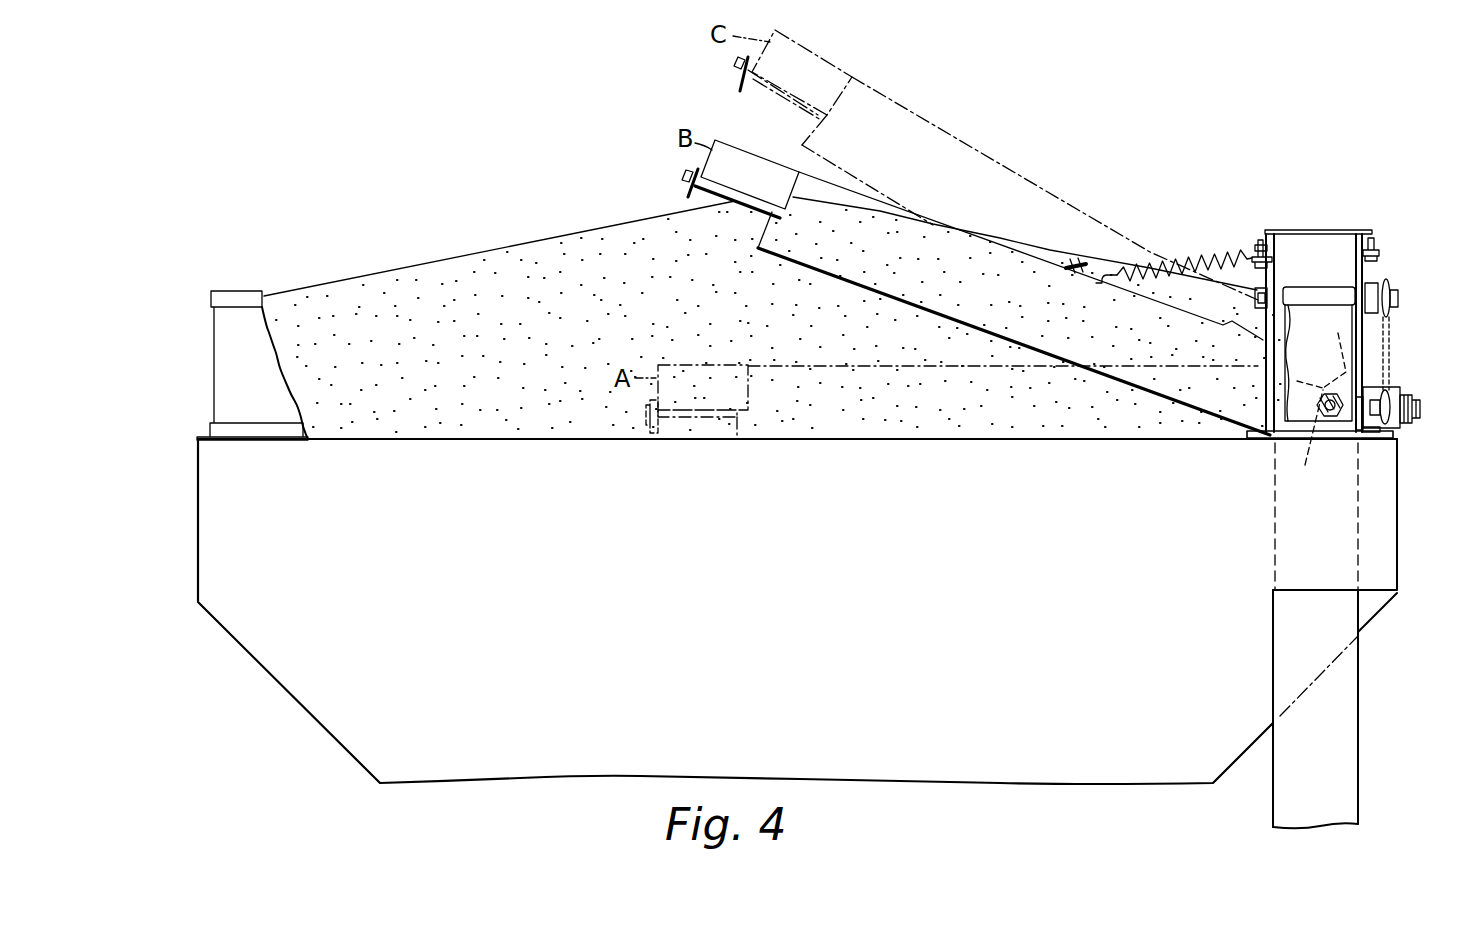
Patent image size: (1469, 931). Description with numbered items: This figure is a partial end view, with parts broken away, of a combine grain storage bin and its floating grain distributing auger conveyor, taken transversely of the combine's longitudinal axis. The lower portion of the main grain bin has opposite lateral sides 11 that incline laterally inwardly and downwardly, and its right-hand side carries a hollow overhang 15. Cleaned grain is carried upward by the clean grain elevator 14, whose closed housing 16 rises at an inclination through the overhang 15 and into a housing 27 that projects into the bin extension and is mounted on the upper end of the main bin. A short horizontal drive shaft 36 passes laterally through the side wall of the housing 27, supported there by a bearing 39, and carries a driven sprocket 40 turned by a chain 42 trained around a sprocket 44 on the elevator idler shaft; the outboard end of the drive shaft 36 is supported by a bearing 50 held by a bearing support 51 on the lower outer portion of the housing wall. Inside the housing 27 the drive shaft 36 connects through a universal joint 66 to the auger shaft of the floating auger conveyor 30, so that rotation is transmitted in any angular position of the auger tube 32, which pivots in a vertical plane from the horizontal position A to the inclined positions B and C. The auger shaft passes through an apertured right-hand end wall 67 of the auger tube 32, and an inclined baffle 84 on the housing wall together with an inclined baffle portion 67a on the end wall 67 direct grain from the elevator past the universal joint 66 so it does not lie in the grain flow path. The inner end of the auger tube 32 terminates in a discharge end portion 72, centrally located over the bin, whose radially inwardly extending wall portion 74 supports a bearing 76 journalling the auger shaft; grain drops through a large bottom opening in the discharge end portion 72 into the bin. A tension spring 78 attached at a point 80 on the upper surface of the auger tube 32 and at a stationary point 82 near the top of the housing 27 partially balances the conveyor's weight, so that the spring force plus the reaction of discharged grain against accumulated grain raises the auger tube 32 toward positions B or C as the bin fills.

The inclined lateral sides 11 is at (300, 697).
The clean grain elevator 14 is at (1358, 710).
The hollow overhang 15 is at (1397, 530).
The closed housing 16 is at (1345, 768).
The housing 27 is at (1337, 272).
The floating auger conveyor subassembly 30 is at (852, 188).
The auger tube 32 is at (880, 212).
The drive shaft 36 is at (1418, 397).
The bearing 39 is at (1367, 438).
The driven sprocket 40 is at (1387, 431).
The chain 42 is at (1390, 332).
The sprocket 44 is at (1391, 285).
The bearing 50 is at (1412, 423).
The bearing support 51 is at (1391, 388).
The universal joint 66 is at (1330, 422).
The right-hand end wall 67 is at (1303, 441).
The inclined baffle portion 67a is at (1323, 387).
The discharge end portion 72 is at (733, 205).
The radially inwardly extending wall portion 74 is at (713, 151).
The bearing 76 is at (690, 188).
The tension spring 78 is at (1163, 262).
The spring connection point 80 is at (1091, 277).
The stationary point 82 is at (1252, 247).
The inclined baffle 84 is at (1331, 349).